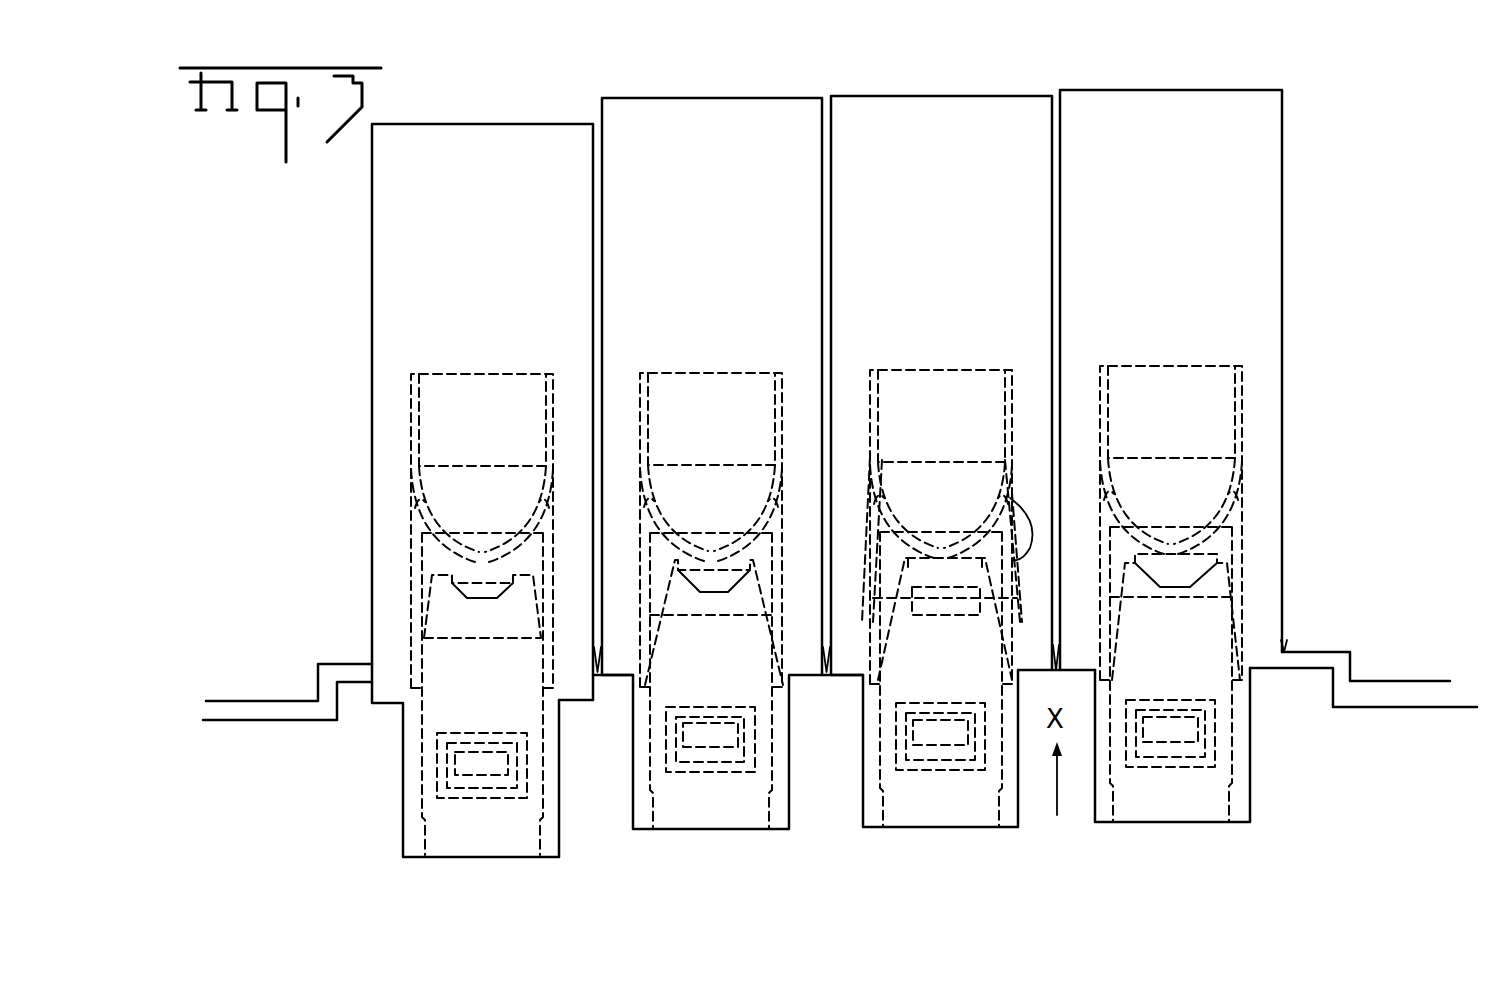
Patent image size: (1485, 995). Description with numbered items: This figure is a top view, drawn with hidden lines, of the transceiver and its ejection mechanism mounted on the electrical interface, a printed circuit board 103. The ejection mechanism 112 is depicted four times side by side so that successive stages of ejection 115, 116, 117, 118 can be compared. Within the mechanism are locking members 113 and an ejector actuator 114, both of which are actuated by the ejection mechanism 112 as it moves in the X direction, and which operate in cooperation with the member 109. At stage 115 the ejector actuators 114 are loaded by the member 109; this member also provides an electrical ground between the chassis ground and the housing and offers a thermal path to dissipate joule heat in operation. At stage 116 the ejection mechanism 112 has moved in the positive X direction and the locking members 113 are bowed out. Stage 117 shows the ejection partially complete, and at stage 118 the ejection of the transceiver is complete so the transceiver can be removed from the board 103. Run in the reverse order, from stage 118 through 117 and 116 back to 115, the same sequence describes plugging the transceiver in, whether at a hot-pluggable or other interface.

The printed circuit board 103 is at (1376, 672).
The member 109 is at (447, 592).
The ejection mechanism 112 is at (1262, 763).
The locking members 113 is at (1003, 482).
The ejector actuator 114 is at (1240, 495).
The stage of ejection 115 is at (1214, 494).
The stage of ejection 116 is at (938, 838).
The stage of ejection 117 is at (710, 840).
The stage of ejection 118 is at (484, 874).